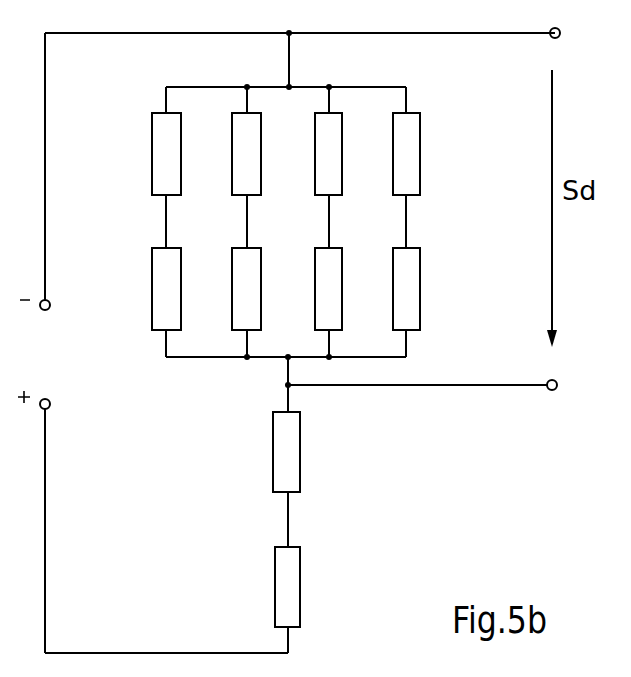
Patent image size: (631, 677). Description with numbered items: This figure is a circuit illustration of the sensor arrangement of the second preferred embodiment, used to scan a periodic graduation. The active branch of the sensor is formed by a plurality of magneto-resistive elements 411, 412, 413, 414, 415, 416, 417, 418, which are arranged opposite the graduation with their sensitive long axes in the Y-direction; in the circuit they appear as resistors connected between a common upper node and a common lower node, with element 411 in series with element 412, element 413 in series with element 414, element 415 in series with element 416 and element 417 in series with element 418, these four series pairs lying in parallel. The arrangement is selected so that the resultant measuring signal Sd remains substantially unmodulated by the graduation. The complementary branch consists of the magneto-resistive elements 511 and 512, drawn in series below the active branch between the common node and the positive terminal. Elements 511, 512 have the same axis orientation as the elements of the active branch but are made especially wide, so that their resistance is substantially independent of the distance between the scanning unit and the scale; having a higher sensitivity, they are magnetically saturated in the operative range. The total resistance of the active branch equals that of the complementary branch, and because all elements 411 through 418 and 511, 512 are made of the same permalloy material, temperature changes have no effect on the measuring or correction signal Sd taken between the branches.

The magneto-resistive element 411 is at (160, 152).
The magneto-resistive element 412 is at (158, 287).
The magneto-resistive element 413 is at (236, 158).
The magneto-resistive element 414 is at (239, 268).
The magneto-resistive element 415 is at (333, 147).
The magneto-resistive element 416 is at (333, 273).
The magneto-resistive element 417 is at (413, 155).
The magneto-resistive element 418 is at (412, 287).
The magneto-resistive element 511 is at (292, 583).
The magneto-resistive element 512 is at (290, 461).